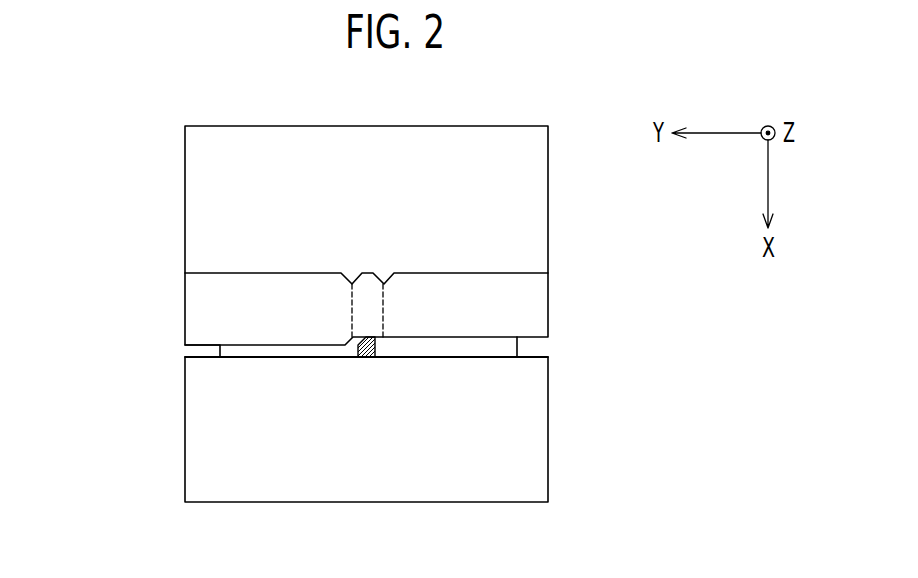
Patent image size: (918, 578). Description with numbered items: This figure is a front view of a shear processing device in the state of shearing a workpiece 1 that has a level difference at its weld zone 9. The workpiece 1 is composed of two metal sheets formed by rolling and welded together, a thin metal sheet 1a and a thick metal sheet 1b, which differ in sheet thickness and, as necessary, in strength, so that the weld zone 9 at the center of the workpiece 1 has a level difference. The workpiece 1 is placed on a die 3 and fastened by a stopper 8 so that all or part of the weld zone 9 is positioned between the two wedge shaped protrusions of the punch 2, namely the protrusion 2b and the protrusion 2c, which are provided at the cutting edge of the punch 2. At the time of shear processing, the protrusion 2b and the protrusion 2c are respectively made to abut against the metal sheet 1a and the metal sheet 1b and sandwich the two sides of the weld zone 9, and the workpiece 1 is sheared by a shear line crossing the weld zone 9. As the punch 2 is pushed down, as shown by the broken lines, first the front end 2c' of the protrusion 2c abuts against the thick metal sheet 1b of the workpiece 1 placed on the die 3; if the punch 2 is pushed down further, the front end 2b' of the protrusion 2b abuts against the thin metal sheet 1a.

The workpiece 1 is at (240, 350).
The metal sheet 1a is at (227, 352).
The metal sheet 1b is at (497, 352).
The punch 2 is at (200, 163).
The protrusion 2b is at (221, 252).
The front end 2b' is at (220, 310).
The protrusion 2c is at (502, 248).
The front end 2c' is at (515, 316).
The die 3 is at (210, 467).
The stopper 8 is at (528, 292).
The weld zone 9 is at (365, 358).